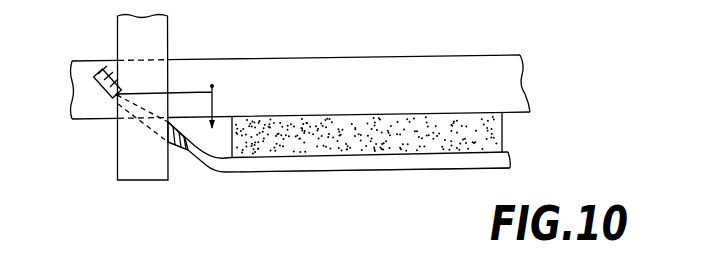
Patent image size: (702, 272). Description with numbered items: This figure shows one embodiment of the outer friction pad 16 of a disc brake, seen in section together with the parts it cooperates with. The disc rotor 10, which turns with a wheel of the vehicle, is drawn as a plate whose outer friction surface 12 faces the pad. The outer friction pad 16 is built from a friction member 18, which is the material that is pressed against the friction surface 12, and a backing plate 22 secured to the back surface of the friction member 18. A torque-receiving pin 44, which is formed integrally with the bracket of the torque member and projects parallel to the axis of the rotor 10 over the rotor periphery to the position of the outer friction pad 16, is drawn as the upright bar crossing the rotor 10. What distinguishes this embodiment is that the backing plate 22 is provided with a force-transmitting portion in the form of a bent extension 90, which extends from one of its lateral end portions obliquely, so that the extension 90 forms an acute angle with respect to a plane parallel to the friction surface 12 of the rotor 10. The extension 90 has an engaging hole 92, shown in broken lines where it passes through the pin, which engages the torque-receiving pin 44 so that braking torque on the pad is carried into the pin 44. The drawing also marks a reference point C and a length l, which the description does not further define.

The disc rotor 10 is at (510, 75).
The friction surface 12 is at (328, 117).
The outer friction pad 16 is at (328, 182).
The friction member 18 is at (492, 138).
The backing plate 22 is at (450, 166).
The torque-receiving pin 44 is at (158, 40).
The bent extension 90 is at (116, 95).
The engaging hole 92 is at (174, 146).
The center point C is at (120, 93).
The length dimension l is at (175, 106).